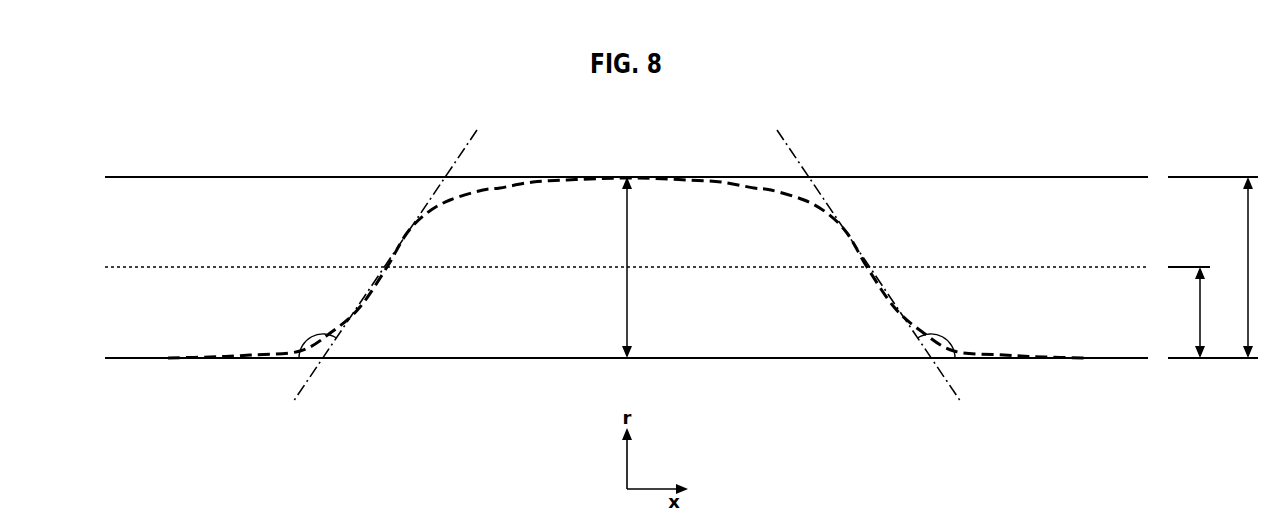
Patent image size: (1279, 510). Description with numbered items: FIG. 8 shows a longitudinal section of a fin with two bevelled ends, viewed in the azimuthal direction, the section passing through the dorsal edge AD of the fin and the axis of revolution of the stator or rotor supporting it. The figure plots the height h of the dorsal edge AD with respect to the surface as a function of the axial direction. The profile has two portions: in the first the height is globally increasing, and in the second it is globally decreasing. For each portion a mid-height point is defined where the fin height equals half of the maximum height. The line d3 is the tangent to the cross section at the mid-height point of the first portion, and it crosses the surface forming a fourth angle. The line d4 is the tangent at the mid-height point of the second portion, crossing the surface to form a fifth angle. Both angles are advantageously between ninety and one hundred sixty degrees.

The dorsal edge AD is at (627, 176).
The tangent to the cross section at the mid-height point of the first portion d3 is at (453, 162).
The tangent to the cross section at the mid-height point of the second portion d4 is at (800, 162).
The height of the dorsal edge h is at (945, 267).